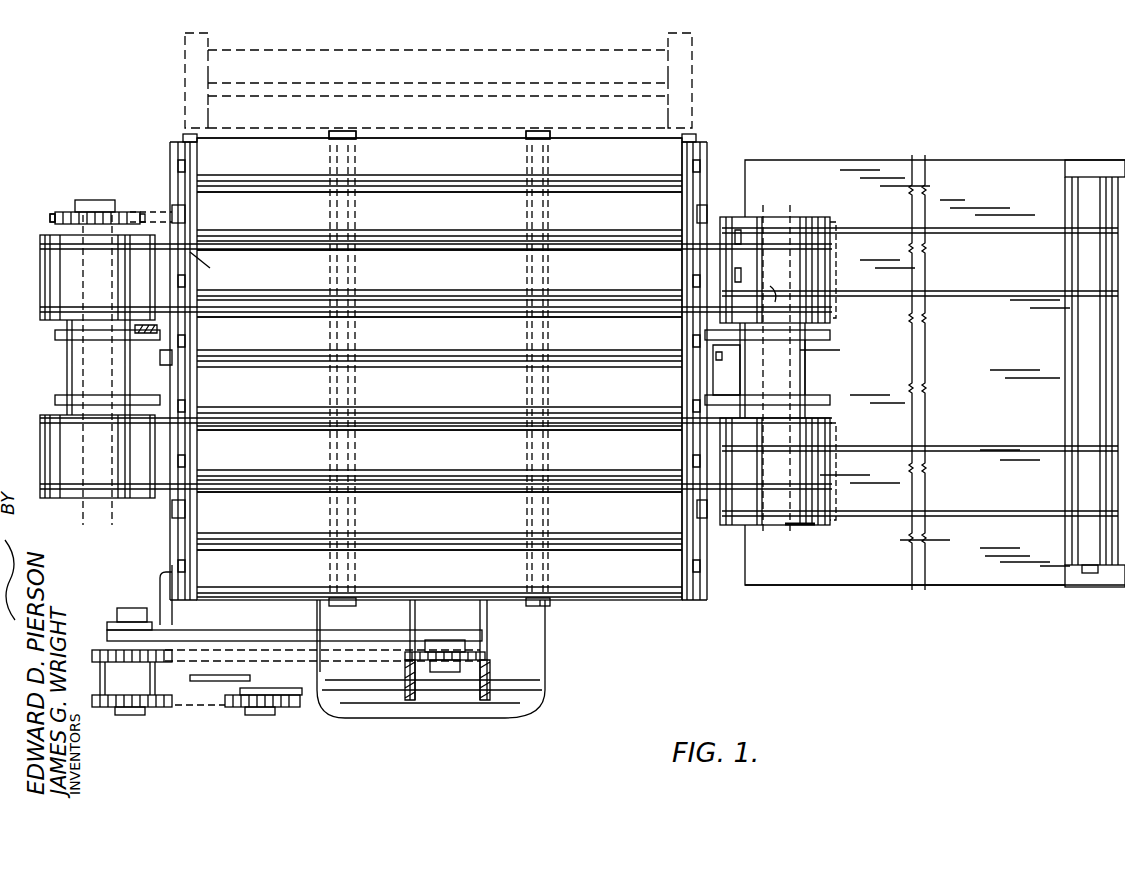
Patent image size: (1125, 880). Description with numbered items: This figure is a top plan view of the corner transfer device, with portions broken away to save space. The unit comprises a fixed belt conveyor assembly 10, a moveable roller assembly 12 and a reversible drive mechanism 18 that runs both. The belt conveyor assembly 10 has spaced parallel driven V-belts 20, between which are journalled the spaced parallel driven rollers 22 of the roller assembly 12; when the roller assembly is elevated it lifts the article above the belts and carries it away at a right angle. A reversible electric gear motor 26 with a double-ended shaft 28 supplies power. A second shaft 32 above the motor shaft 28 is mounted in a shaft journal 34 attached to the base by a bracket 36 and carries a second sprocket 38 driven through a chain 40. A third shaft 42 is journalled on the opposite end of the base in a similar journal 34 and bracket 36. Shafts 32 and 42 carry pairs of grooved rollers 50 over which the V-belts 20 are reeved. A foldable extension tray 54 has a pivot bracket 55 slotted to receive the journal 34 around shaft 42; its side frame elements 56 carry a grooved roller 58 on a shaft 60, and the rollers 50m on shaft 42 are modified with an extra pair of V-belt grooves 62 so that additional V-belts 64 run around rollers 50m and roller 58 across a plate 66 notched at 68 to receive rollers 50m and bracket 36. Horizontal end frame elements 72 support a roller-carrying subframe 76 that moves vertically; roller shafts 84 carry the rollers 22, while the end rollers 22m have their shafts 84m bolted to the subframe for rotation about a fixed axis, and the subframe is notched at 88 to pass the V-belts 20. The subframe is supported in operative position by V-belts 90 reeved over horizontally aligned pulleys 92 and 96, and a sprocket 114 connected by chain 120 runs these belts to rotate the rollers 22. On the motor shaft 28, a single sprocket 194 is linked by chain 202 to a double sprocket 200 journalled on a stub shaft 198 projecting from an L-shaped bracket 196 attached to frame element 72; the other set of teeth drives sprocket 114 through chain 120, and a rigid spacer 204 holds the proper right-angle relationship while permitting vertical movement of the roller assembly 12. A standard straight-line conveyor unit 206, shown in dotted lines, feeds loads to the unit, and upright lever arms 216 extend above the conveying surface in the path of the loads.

The belt conveyor assembly 10 is at (135, 510).
The roller assembly 12 is at (604, 610).
The reversible drive mechanism 18 is at (232, 716).
The driven belts 20 is at (272, 266).
The driven rollers 22 is at (439, 362).
The fixed-axis roller 22m is at (439, 361).
The reversible electric gear motor 26 is at (505, 719).
The double-ended shaft 28 is at (262, 716).
The second shaft 32 is at (90, 200).
The shaft journal 34 is at (70, 346).
The bracket 36 is at (58, 398).
The second sprocket 38 is at (52, 219).
The chain 40 is at (148, 211).
The third shaft 42 is at (812, 355).
The grooved rollers 50 is at (45, 292).
The modified grooved rollers 50m is at (815, 219).
The foldable extension tray 54 is at (900, 572).
The pivot bracket 55 is at (740, 345).
The side frame elements 56 is at (1072, 162).
The grooved roller 58 is at (1082, 418).
The shaft 60 is at (1096, 574).
The V-belt grooves 62 is at (772, 290).
The V-belts 64 is at (1005, 233).
The plate 66 is at (980, 557).
The notch 68 is at (812, 522).
The end frame elements 72 is at (171, 151).
The roller-carrying subframe 76 is at (186, 136).
The roller shaft 84 is at (700, 165).
The fixed-axis roller shaft 84m is at (690, 216).
The notch 88 is at (192, 256).
The V-belts 90 is at (345, 453).
The pulleys 92 is at (543, 602).
The pulleys 96 is at (545, 139).
The sprocket 114 is at (478, 660).
The chain 120 is at (388, 662).
The single sprocket 194 is at (290, 700).
The L-shaped bracket 196 is at (165, 602).
The stub shaft 198 is at (122, 648).
The double sprocket 200 is at (112, 708).
The chain 202 is at (185, 705).
The rigid spacer 204 is at (250, 636).
The straight line conveyor unit 206 is at (685, 80).
The lever arms 216 is at (156, 337).